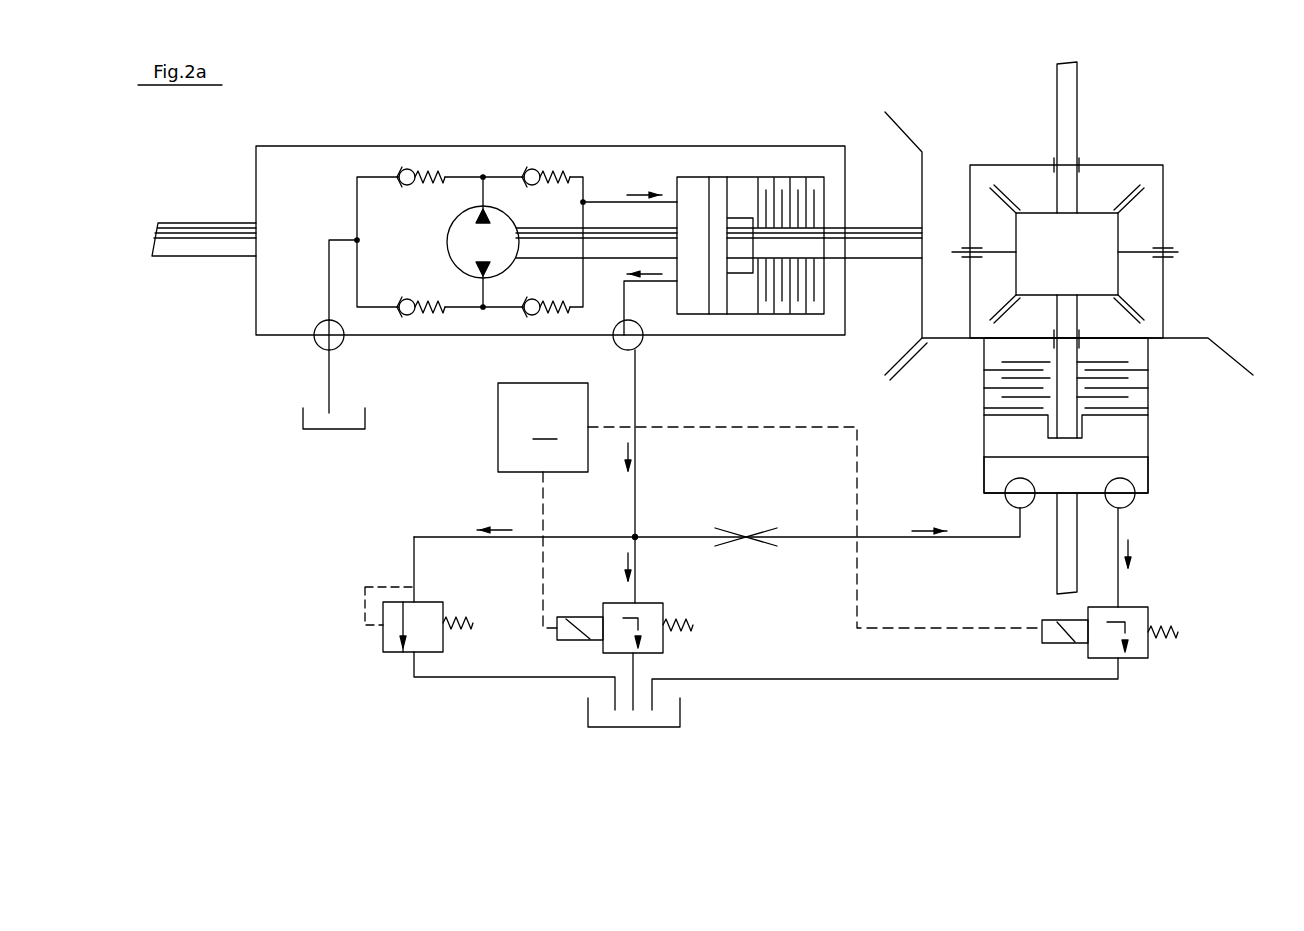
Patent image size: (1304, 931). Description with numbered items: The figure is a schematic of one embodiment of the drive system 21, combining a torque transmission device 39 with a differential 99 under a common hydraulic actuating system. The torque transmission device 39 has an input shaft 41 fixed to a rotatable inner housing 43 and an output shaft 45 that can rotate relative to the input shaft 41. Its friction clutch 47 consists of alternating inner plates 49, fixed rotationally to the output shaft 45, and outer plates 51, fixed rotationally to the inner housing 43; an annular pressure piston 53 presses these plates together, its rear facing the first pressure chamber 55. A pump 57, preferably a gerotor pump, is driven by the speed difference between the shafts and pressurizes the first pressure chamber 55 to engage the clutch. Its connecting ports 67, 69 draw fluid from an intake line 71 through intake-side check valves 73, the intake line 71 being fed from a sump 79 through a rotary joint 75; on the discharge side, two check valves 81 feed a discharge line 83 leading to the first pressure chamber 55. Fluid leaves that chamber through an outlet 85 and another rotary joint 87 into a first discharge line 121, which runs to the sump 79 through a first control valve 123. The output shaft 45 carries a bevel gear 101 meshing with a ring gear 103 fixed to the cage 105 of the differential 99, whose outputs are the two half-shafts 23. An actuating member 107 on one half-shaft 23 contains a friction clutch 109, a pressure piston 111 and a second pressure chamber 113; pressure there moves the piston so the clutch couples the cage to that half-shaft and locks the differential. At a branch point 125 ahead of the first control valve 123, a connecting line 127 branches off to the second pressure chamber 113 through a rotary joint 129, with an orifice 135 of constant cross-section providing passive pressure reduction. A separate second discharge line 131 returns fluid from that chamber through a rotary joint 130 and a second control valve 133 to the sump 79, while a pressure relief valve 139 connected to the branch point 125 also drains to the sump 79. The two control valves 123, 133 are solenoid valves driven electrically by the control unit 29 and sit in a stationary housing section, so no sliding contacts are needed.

The drive system 21 is at (930, 62).
The half-shaft 23 is at (1075, 90).
The control unit 29 is at (770, 505).
The torque transmission device 39 is at (812, 100).
The input shaft 41 is at (192, 248).
The inner housing 43 is at (294, 165).
The output shaft 45 is at (870, 243).
The friction clutch 47 is at (778, 178).
The inner plates 49 is at (795, 220).
The outer plates 51 is at (808, 178).
The pressure piston 53 is at (728, 190).
The first pressure chamber 55 is at (690, 200).
The pump 57 is at (465, 206).
The connecting port 67 is at (493, 205).
The connecting port 69 is at (478, 287).
The intake line 71 is at (325, 248).
The intake-side check valve 73 is at (430, 172).
The rotary joint 75 is at (317, 343).
The sump 79 is at (303, 417).
The check valve 81 is at (550, 172).
The discharge line 83 is at (607, 200).
The outlet 85 is at (654, 282).
The rotary joint 87 is at (642, 344).
The differential 99 is at (1017, 138).
The bevel gear 101 is at (927, 150).
The ring gear 103 is at (1188, 340).
The cage 105 is at (1167, 210).
The actuating member 107 is at (1163, 414).
The friction clutch 109 is at (1142, 383).
The pressure piston 111 is at (1140, 435).
The second pressure chamber 113 is at (1135, 476).
The first discharge line 121 is at (637, 452).
The first control valve 123 is at (663, 604).
The branch point 125 is at (637, 535).
The connecting line 127 is at (875, 536).
The rotary joint 129 is at (1005, 495).
The rotary joint 130 is at (1135, 498).
The second discharge line 131 is at (903, 683).
The second control valve 133 is at (1150, 608).
The orifice 135 is at (746, 534).
The pressure relief valve 139 is at (383, 645).